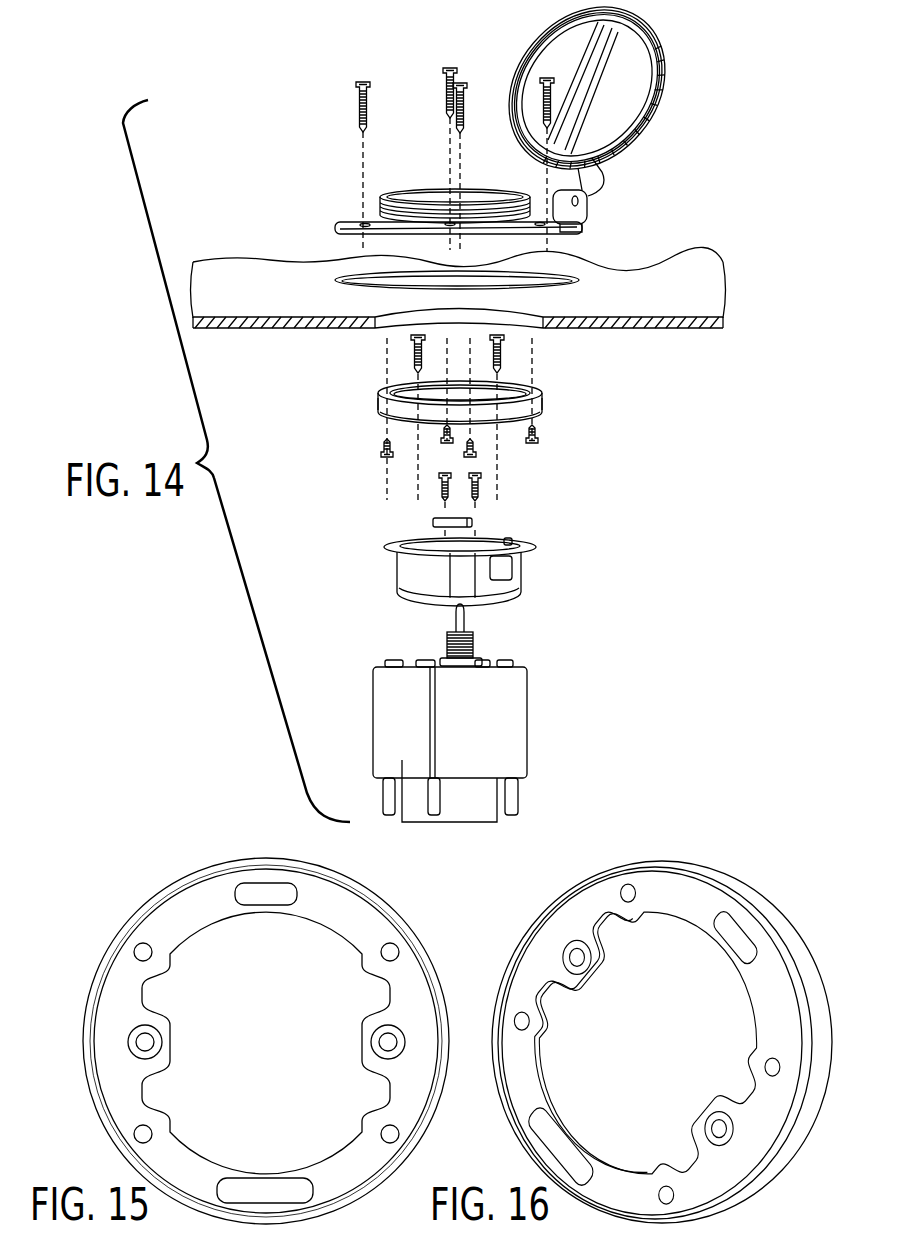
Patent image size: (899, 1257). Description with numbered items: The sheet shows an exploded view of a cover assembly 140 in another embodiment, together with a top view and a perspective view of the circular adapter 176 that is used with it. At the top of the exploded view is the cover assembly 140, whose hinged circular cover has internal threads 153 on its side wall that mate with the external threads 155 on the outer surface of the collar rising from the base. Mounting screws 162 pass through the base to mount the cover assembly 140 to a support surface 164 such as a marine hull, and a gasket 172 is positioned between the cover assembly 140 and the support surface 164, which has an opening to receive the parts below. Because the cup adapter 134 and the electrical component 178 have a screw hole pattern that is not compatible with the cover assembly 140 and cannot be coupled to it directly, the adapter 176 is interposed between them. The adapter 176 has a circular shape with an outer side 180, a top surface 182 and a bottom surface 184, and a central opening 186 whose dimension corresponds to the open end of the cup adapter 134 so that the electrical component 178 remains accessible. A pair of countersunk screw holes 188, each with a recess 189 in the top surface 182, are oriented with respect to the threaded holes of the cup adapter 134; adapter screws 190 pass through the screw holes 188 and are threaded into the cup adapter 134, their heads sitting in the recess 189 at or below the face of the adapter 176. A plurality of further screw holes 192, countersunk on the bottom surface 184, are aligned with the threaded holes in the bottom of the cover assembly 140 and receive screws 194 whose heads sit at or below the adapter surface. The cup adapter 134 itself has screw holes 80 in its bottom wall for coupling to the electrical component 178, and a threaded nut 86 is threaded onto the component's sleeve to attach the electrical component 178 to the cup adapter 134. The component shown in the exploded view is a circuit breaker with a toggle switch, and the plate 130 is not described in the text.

In FIG. 14, the screw holes 80 is at (483, 492).
In FIG. 14, the threaded nut 86 is at (477, 522).
In FIG. 14, the mounting plate 130 is at (369, 212).
In FIG. 14, the cup adapter 134 is at (394, 570).
In FIG. 14, the cover assembly 140 is at (676, 66).
In FIG. 14, the internal threads 153 is at (588, 43).
In FIG. 14, the external threads 155 is at (378, 200).
In FIG. 14, the mounting screws 162 is at (357, 100).
In FIG. 14, the support surface 164 is at (676, 262).
In FIG. 14, the gasket 172 is at (335, 278).
In FIG. 14, the adapter 176 is at (548, 400).
In FIG. 15, the adapter 176 is at (153, 891).
In FIG. 16, the adapter 176 is at (725, 864).
In FIG. 14, the electrical component 178 is at (533, 695).
In FIG. 14, the outer side 180 is at (545, 406).
In FIG. 16, the outer side 180 is at (771, 918).
In FIG. 14, the top surface 182 is at (385, 393).
In FIG. 15, the top surface 182 is at (122, 1000).
In FIG. 16, the top surface 182 is at (550, 938).
In FIG. 14, the bottom surface 184 is at (380, 413).
In FIG. 15, the central opening 186 is at (240, 977).
In FIG. 16, the central opening 186 is at (589, 1060).
In FIG. 15, the countersunk screw holes 188 is at (160, 1033).
In FIG. 16, the countersunk screw holes 188 is at (563, 955).
In FIG. 15, the recess 189 is at (153, 1045).
In FIG. 16, the recess 189 is at (572, 955).
In FIG. 14, the adapter screws 190 is at (410, 357).
In FIG. 15, the screw holes 192 is at (152, 958).
In FIG. 16, the screw holes 192 is at (634, 890).
In FIG. 14, the screws 194 is at (377, 455).